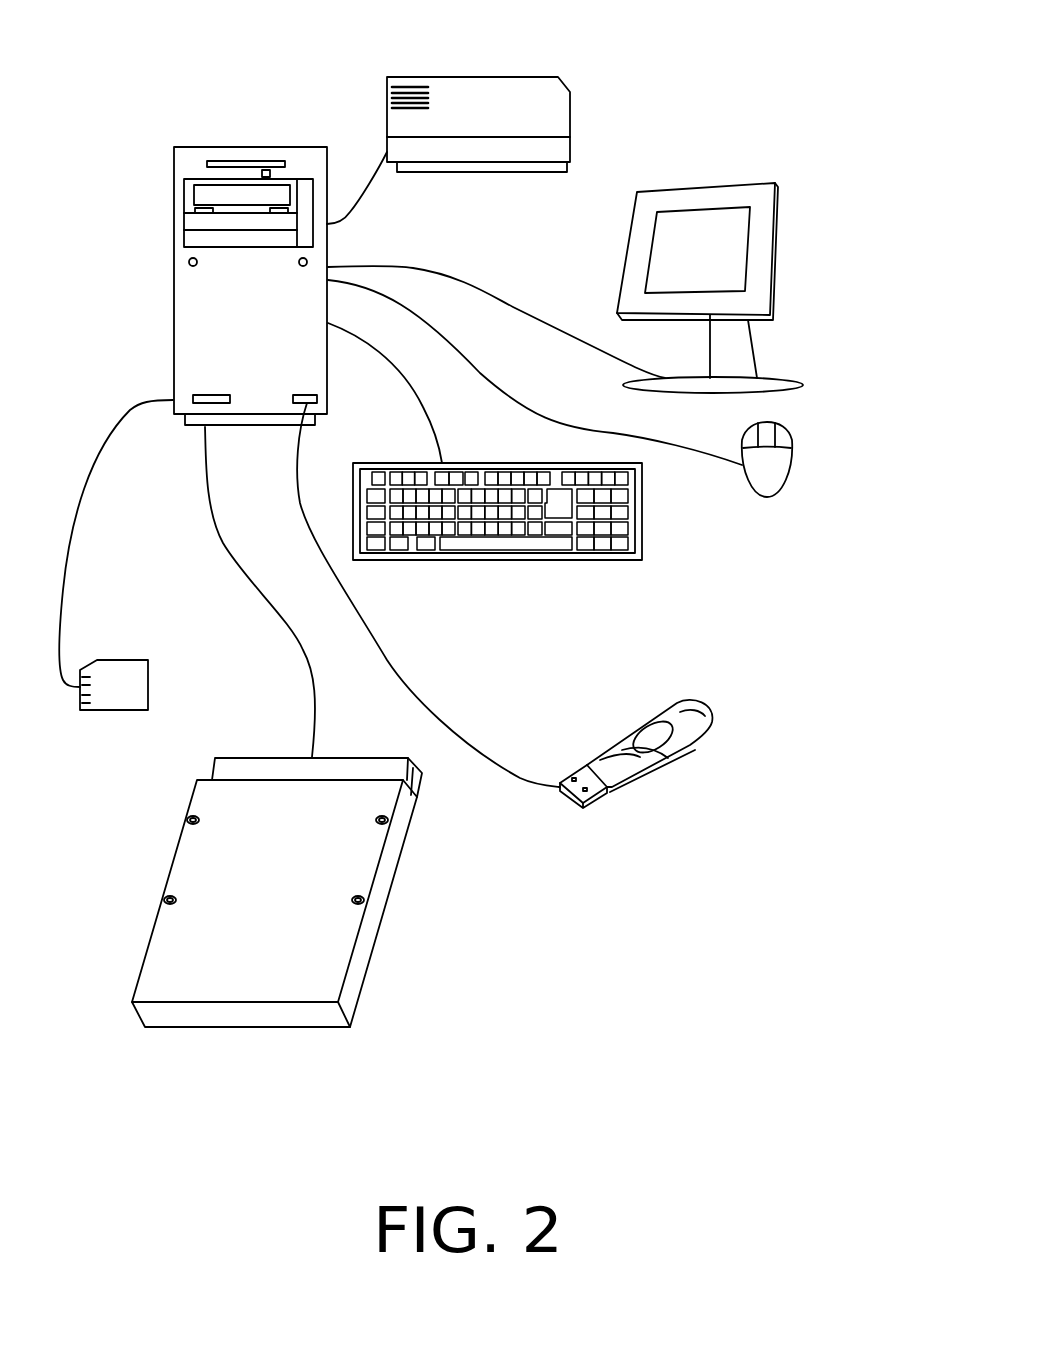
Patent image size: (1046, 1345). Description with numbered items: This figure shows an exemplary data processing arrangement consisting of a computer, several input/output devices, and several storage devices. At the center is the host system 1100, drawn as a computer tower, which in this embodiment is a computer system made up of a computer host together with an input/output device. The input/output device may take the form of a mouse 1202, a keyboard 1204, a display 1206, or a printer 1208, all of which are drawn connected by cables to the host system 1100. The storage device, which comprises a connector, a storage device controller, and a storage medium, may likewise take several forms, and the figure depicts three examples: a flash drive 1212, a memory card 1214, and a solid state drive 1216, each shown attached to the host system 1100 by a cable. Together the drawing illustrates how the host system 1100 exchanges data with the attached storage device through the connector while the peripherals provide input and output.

The host system 1100 is at (250, 147).
The mouse 1202 is at (790, 462).
The keyboard 1204 is at (640, 527).
The display 1206 is at (715, 183).
The printer 1208 is at (473, 77).
The flash drive 1212 is at (627, 732).
The memory card 1214 is at (148, 673).
The solid state drive (SSD) 1216 is at (345, 745).